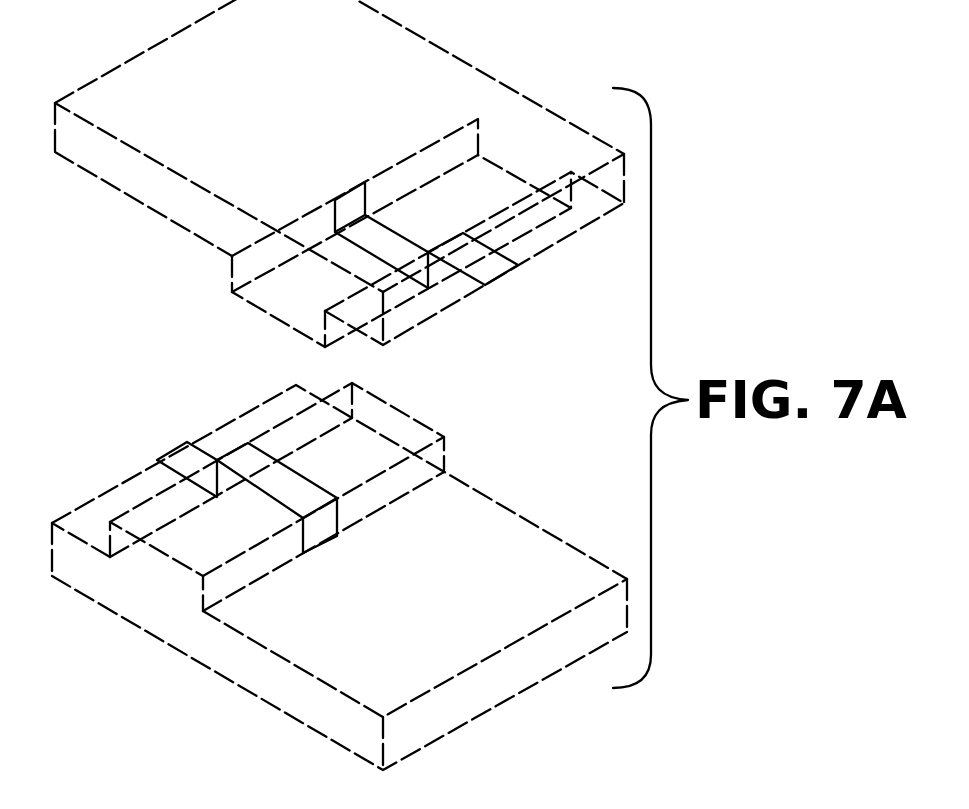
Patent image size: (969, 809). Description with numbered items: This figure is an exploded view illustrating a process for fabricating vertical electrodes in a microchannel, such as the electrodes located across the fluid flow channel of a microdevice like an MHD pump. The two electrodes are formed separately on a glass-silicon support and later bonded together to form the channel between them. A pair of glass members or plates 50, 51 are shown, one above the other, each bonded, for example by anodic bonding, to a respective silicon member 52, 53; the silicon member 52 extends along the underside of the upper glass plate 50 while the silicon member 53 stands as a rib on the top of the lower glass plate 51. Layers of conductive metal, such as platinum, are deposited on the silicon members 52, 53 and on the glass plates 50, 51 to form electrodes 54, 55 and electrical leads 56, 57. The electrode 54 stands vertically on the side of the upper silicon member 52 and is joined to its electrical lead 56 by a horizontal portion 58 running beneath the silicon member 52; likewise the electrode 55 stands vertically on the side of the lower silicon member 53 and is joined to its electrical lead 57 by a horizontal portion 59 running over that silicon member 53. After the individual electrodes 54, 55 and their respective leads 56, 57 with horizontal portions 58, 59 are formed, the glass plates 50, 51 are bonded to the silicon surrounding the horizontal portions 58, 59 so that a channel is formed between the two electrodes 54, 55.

The glass member or plate 50 is at (495, 78).
The glass member or plate 51 is at (538, 535).
The silicon member 52 is at (248, 303).
The silicon member 53 is at (430, 432).
The electrode 54 is at (363, 201).
The electrode 55 is at (325, 533).
The electrical lead 56 is at (493, 270).
The electrical lead 57 is at (182, 448).
The horizontal portion 58 is at (395, 248).
The horizontal portion 59 is at (287, 486).